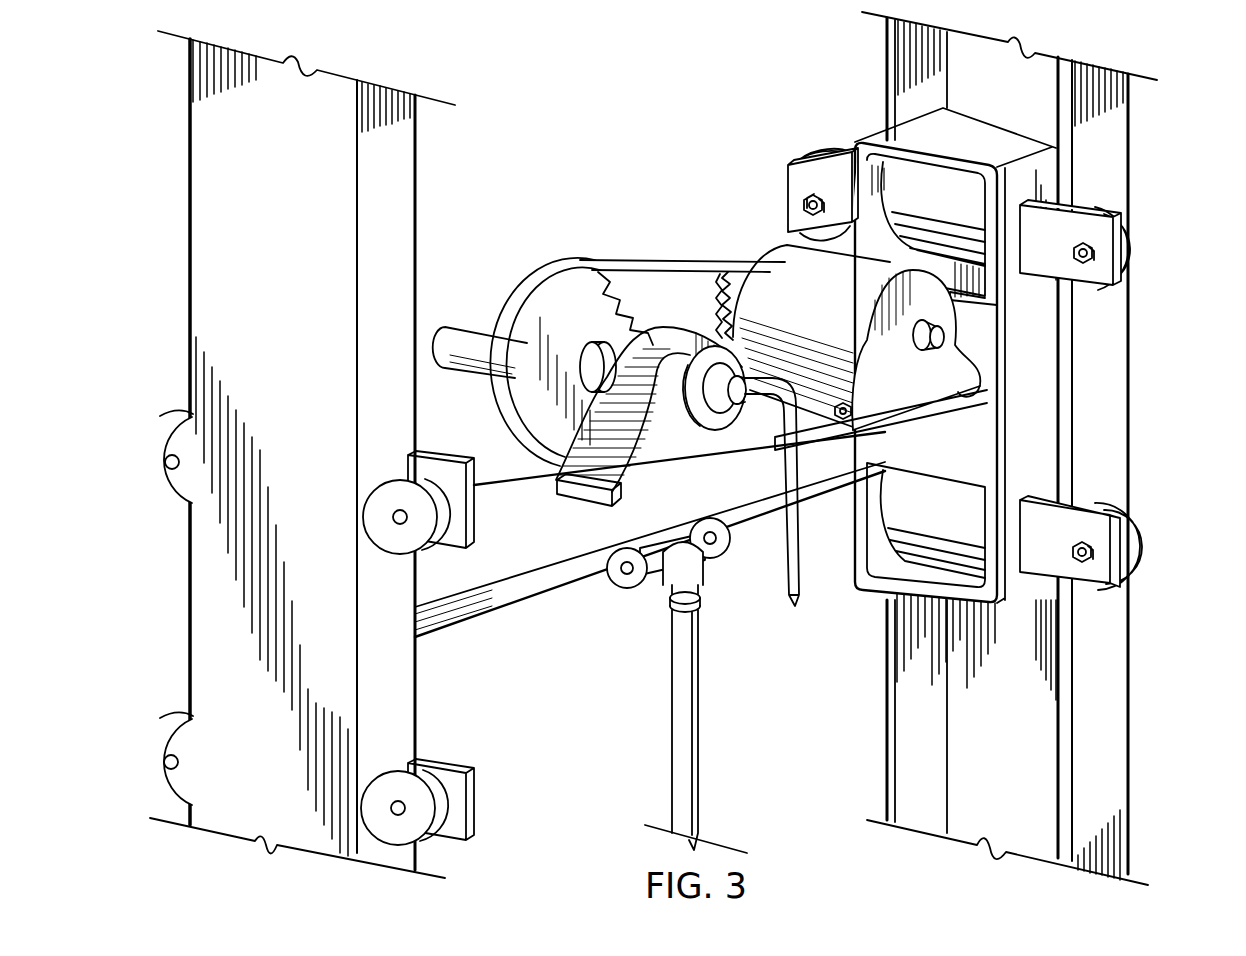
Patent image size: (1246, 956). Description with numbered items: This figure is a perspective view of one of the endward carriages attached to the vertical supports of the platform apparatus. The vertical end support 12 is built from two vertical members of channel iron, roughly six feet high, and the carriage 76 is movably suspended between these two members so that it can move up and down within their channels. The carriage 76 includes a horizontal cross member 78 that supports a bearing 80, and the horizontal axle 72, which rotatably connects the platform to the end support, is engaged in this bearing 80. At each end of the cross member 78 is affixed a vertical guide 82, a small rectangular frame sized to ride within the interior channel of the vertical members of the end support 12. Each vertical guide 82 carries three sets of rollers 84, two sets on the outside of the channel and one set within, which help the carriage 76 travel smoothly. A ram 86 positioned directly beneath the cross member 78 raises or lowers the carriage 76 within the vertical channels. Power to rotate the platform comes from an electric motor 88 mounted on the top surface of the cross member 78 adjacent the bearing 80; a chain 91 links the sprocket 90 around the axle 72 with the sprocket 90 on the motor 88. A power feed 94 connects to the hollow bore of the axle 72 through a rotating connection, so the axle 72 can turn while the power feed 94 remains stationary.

The vertical end support 12 is at (205, 136).
The horizontal axle 72 is at (462, 335).
The carriage 76 is at (1040, 373).
The horizontal cross member 78 is at (510, 548).
The bearing 80 is at (600, 480).
The vertical guide 82 is at (1040, 310).
The roller 84 is at (158, 480).
The ram 86 is at (688, 792).
The electric motor 88 is at (765, 278).
The sprocket 90 is at (618, 305).
The chain 91 is at (612, 268).
The power feed 94 is at (795, 530).